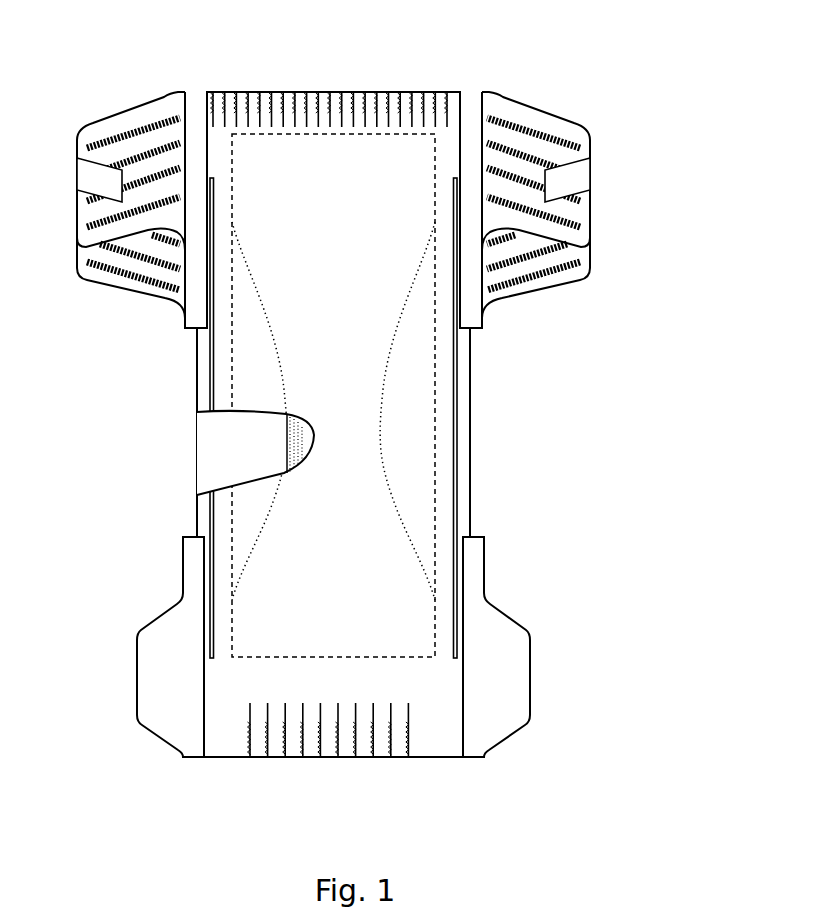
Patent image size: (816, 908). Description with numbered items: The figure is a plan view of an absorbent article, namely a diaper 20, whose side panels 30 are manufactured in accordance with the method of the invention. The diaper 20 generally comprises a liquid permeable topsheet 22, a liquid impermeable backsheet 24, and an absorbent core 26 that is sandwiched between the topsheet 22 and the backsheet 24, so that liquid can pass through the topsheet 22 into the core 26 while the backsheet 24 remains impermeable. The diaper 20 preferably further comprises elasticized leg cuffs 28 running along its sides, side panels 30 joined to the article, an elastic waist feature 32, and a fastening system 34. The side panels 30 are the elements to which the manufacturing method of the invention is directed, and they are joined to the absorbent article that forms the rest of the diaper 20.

The diaper 20 is at (599, 329).
The liquid permeable topsheet 22 is at (417, 470).
The liquid impermeable backsheet 24 is at (210, 449).
The absorbent core 26 is at (287, 449).
The elasticized leg cuffs 28 is at (212, 379).
The side panels 30 is at (152, 127).
The elastic waist feature 32 is at (308, 107).
The fastening system 34 is at (606, 178).